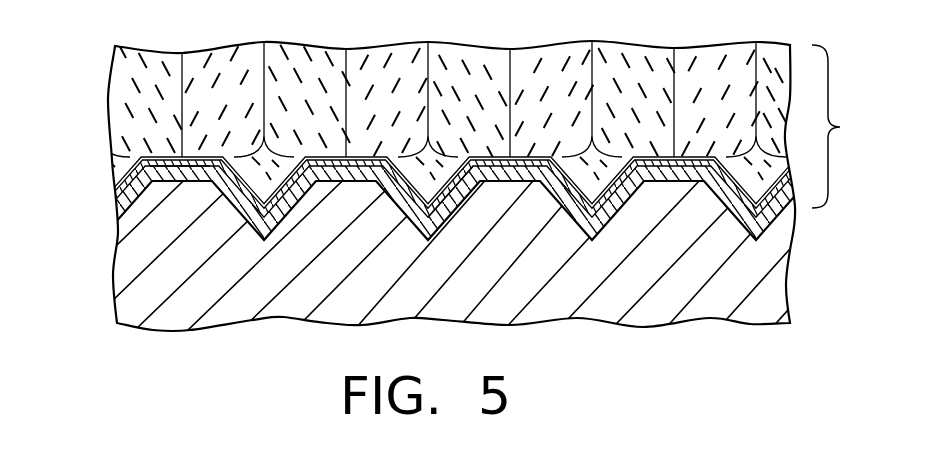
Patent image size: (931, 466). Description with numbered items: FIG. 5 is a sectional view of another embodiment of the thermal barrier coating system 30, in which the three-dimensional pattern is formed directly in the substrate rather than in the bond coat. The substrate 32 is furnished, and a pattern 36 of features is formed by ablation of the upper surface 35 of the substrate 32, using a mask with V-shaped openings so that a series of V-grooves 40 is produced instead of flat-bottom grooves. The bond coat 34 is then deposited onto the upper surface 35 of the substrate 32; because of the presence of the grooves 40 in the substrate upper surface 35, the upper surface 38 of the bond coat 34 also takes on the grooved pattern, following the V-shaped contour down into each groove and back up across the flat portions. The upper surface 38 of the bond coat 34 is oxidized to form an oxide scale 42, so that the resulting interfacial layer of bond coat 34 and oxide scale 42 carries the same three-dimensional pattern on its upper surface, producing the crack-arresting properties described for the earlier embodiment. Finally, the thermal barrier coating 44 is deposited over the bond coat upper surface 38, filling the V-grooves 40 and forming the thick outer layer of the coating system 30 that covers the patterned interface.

The thermal barrier coating system 30 is at (849, 126).
The substrate 32 is at (130, 260).
The bond coat 34 is at (122, 188).
The upper surface of the substrate 35 is at (176, 172).
The pattern of features 36 is at (397, 245).
The upper surface of the bond coat 38 is at (120, 163).
The V-grooves 40 is at (447, 219).
The oxide scale 42 is at (117, 152).
The thermal barrier coating 44 is at (118, 72).